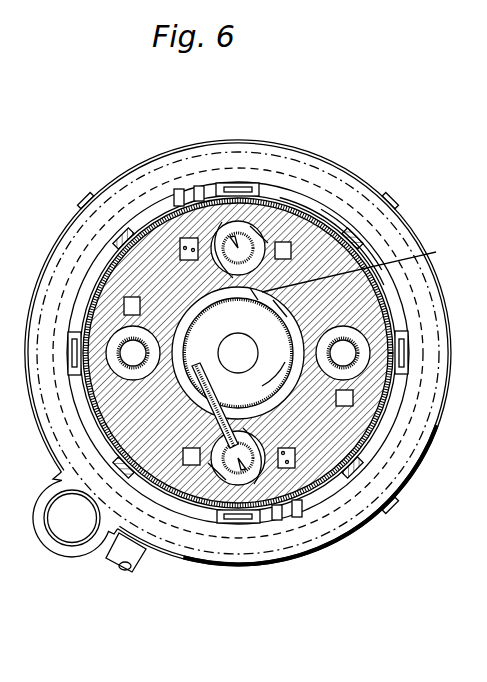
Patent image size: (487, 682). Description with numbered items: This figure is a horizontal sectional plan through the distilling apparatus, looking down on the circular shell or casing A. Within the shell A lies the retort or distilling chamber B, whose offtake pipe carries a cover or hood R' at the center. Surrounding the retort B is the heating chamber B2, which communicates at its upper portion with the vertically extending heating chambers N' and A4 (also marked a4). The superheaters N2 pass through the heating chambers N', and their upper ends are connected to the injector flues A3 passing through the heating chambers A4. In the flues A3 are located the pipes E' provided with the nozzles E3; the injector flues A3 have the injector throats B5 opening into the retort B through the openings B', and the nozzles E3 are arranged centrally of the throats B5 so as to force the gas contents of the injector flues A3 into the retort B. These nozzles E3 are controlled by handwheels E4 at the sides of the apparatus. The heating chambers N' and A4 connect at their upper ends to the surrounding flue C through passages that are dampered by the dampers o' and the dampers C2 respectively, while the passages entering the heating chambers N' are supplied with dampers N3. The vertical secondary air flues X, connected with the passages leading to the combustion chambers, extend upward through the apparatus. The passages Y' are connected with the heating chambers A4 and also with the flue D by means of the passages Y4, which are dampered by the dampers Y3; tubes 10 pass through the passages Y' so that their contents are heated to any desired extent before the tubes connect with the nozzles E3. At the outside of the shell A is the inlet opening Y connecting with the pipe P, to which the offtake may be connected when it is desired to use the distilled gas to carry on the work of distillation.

The shell A is at (372, 272).
The pipe P is at (80, 238).
The inlet opening Y is at (119, 571).
The handwheels E4 is at (215, 188).
The heating chambers N' is at (241, 395).
The dampers o' is at (38, 384).
The passages Y' is at (250, 340).
The passages Y4 is at (185, 240).
The dampers Y3 is at (189, 236).
The tubes 10 is at (181, 247).
The vertical secondary air flues X is at (238, 353).
The injector flues A3 is at (278, 208).
The heating chambers A4 is at (292, 216).
The dampers N3 is at (118, 345).
The superheaters N2 is at (244, 353).
The nozzles E3 is at (262, 203).
The pipes E' is at (231, 526).
The dampers C2 is at (250, 230).
The retort B is at (238, 353).
The heating chamber B2 is at (195, 308).
The cover or hood R' is at (238, 353).
The heating chambers a4 is at (265, 388).
The openings B' is at (215, 392).
The injector throats B5 is at (230, 402).